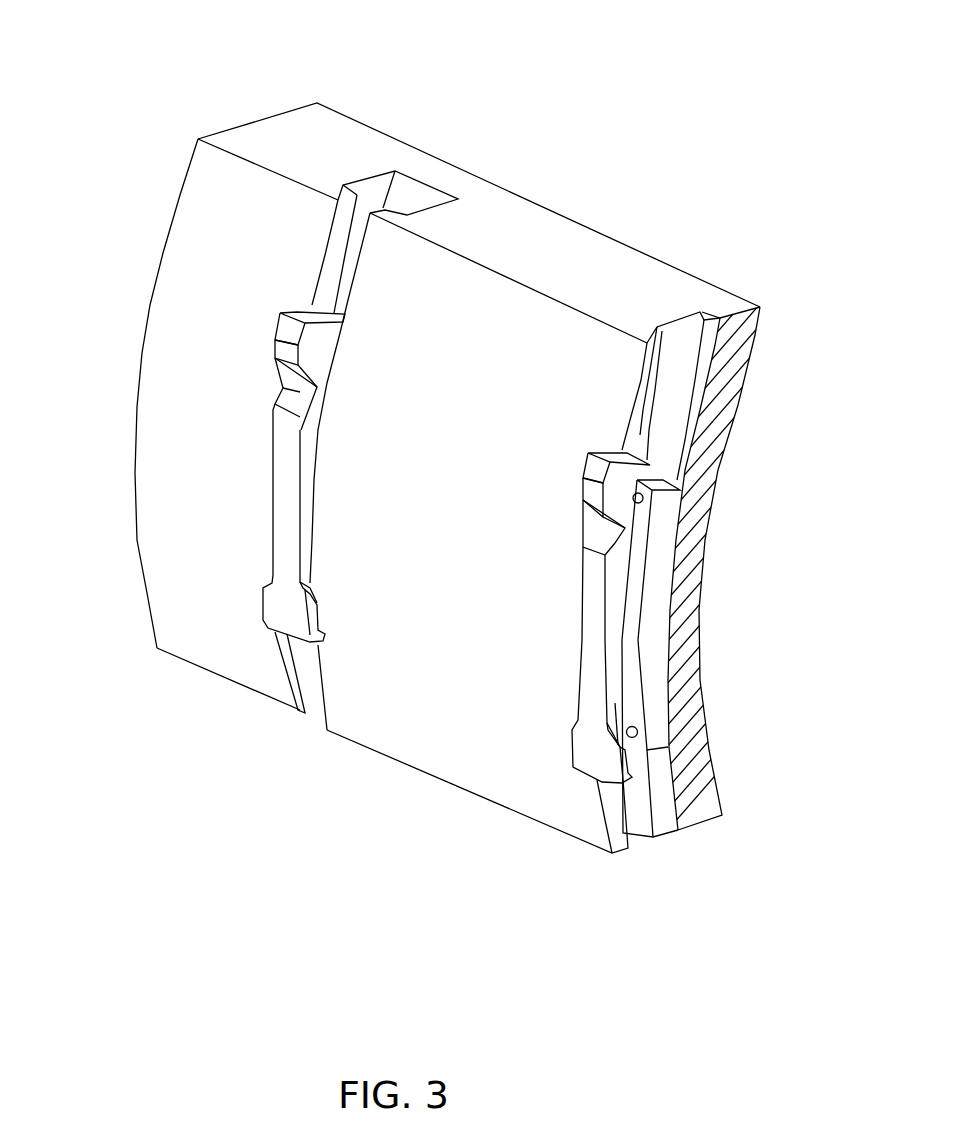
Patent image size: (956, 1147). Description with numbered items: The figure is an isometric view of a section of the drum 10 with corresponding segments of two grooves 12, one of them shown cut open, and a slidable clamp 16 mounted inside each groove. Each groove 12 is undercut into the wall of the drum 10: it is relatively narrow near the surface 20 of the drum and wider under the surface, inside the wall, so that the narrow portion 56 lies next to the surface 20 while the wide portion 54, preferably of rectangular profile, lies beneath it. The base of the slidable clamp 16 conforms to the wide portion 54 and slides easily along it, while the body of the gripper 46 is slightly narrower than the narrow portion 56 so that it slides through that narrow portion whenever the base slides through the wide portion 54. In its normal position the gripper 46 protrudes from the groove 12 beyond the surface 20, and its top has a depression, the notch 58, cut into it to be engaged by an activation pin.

The drum 10 is at (133, 473).
The groove 12 is at (332, 216).
The slidable clamp 16 is at (376, 492).
The surface 20 is at (168, 422).
The gripper 46 is at (290, 555).
The wide portion 54 is at (433, 180).
The narrow portion 56 is at (311, 700).
The notch 58 is at (567, 481).